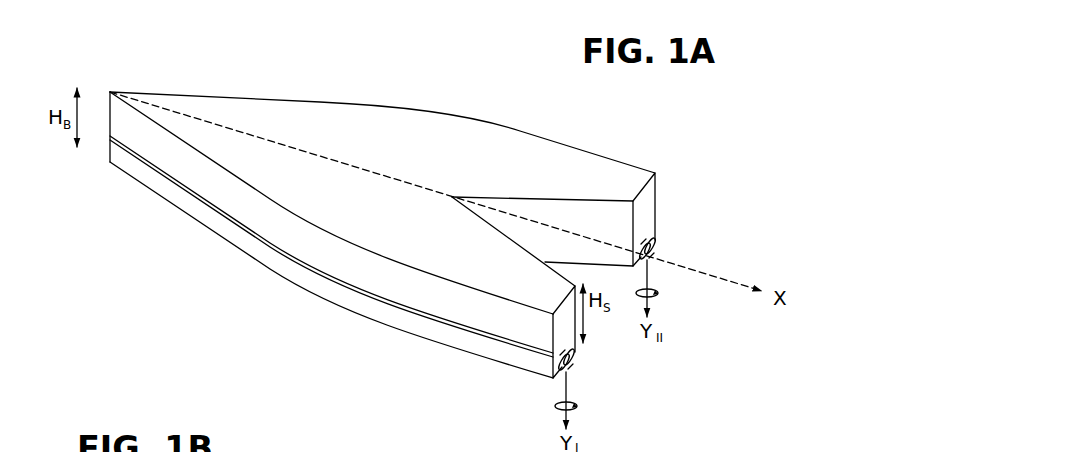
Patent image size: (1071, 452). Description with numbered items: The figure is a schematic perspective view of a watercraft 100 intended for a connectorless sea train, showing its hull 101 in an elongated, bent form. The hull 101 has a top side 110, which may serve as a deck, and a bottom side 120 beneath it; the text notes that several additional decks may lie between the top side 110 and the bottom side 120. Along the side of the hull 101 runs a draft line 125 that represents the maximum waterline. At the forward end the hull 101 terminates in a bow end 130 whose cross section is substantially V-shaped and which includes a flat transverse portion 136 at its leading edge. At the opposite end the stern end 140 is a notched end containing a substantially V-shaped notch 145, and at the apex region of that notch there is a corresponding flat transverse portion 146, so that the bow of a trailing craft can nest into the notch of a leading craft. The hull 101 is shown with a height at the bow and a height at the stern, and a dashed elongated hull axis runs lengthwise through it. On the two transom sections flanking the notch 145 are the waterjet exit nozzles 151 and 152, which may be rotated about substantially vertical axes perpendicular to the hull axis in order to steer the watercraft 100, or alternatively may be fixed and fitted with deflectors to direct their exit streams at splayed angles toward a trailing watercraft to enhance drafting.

The watercraft 100 is at (503, 107).
The hull 101 is at (370, 157).
The top side 110 is at (222, 116).
The bottom side 120 is at (176, 208).
The draft line 125 is at (288, 258).
The bow end 130 is at (107, 115).
The flat transverse portion 136 is at (110, 91).
The stern end 140 is at (661, 202).
The substantially V-shaped notch 145 is at (517, 231).
The flat transverse portion 146 is at (452, 197).
The exit nozzle 151 is at (560, 361).
The exit nozzle 152 is at (654, 247).